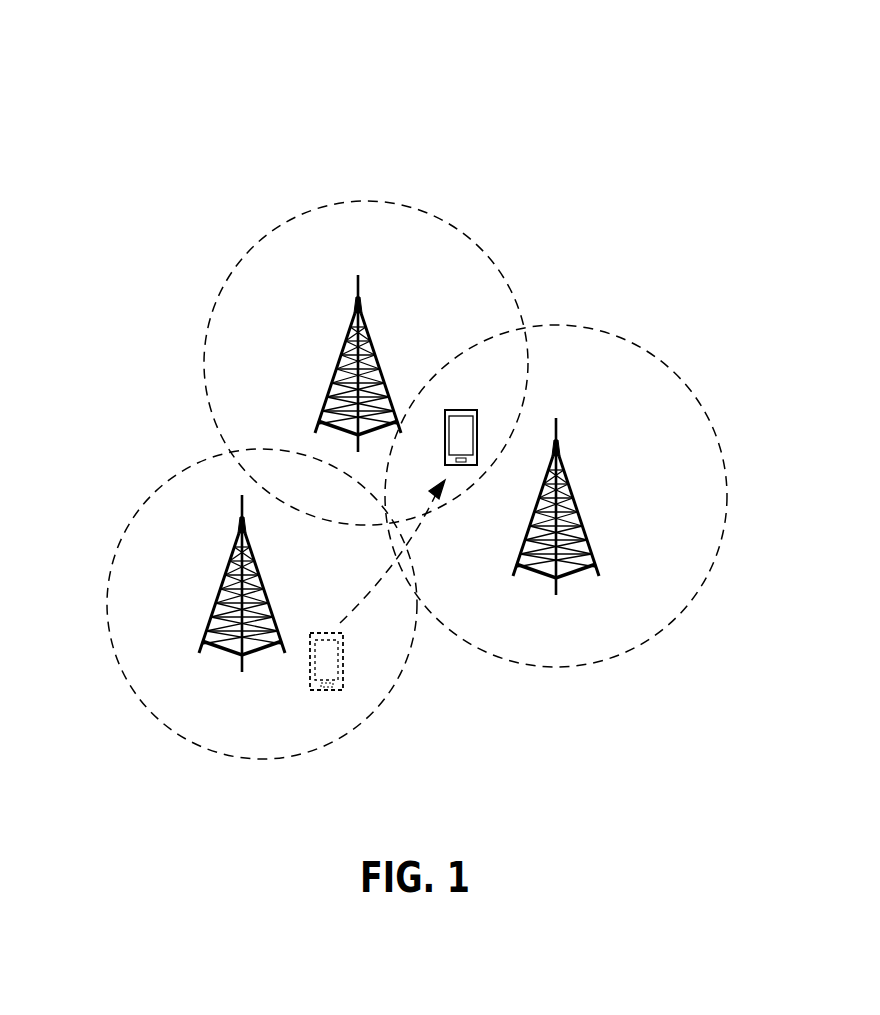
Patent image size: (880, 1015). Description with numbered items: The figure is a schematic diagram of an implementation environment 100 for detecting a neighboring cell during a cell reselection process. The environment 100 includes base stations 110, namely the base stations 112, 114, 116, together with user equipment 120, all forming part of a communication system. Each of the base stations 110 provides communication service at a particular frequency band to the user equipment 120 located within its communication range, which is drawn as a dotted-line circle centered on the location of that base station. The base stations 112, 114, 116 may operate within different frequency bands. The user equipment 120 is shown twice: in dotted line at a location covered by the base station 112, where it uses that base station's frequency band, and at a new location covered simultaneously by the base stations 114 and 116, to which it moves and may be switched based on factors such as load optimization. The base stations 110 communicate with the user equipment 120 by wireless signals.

The implementation environment 100 is at (398, 119).
The base stations 110 is at (590, 462).
The base station 112 is at (262, 590).
The base station 114 is at (371, 352).
The base station 116 is at (573, 512).
The user equipment 120 is at (478, 436).